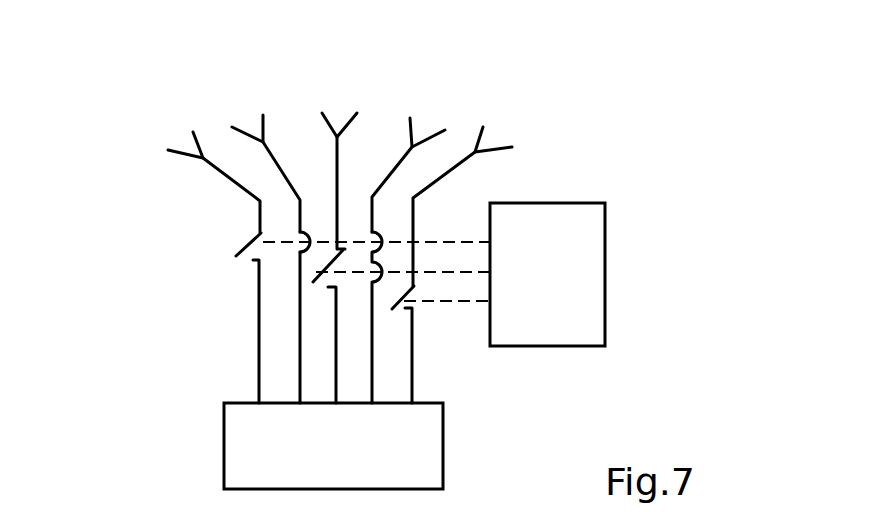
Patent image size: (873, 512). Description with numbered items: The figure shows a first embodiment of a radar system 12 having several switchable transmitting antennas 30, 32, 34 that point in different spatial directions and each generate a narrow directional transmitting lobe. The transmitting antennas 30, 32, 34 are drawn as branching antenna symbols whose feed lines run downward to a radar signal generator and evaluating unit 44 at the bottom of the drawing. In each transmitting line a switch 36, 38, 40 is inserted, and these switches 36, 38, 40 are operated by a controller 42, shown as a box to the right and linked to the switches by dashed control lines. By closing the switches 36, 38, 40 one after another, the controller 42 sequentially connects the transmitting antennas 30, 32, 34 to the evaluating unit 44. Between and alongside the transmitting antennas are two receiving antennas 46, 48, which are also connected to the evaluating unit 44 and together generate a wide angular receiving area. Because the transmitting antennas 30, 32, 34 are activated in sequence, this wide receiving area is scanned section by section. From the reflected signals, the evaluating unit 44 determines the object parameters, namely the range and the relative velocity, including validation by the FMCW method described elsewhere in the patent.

The radar system 12 is at (168, 306).
The transmitting antenna 30 is at (218, 167).
The receiving antenna 46 is at (278, 160).
The transmitting antenna 32 is at (342, 157).
The receiving antenna 48 is at (413, 127).
The transmitting antenna 34 is at (453, 172).
The switch 36 is at (247, 247).
The switch 38 is at (305, 273).
The switch 40 is at (406, 293).
The controller 42 is at (605, 257).
The radar signal generator and evaluating unit 44 is at (443, 444).